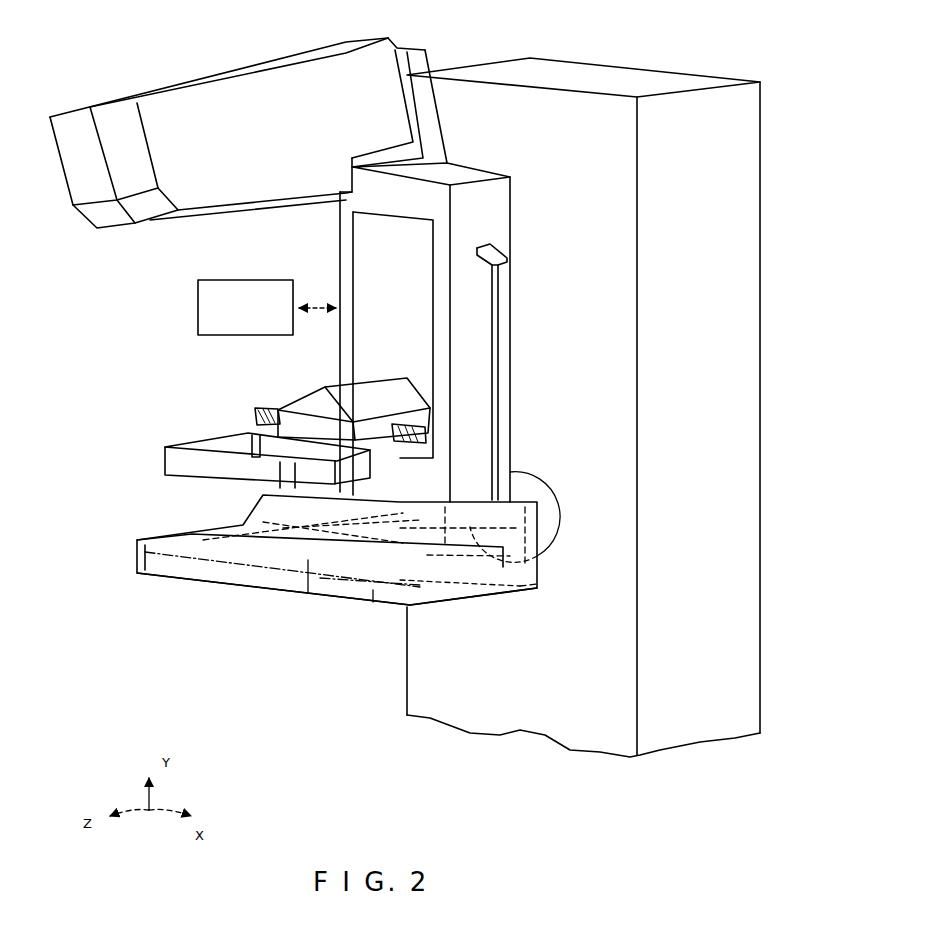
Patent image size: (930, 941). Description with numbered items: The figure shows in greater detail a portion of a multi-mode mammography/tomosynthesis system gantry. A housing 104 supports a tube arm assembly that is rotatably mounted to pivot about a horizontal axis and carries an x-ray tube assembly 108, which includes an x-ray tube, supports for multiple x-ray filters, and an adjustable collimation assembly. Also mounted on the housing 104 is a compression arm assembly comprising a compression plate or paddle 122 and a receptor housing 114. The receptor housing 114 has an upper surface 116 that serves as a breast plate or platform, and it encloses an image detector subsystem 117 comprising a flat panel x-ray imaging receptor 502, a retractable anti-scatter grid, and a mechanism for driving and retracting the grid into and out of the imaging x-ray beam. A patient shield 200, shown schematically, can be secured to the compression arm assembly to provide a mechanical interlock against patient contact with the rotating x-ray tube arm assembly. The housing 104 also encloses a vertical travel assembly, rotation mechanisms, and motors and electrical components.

The housing 104 is at (624, 53).
The x-ray tube assembly 108 is at (176, 236).
The patient shield 200 is at (198, 312).
The compression plate or paddle 122 is at (207, 437).
The upper surface 116 is at (197, 537).
The receptor housing 114 is at (134, 568).
The image detector subsystem 117 is at (503, 607).
The flat panel x-ray imaging receptor 502 is at (373, 590).